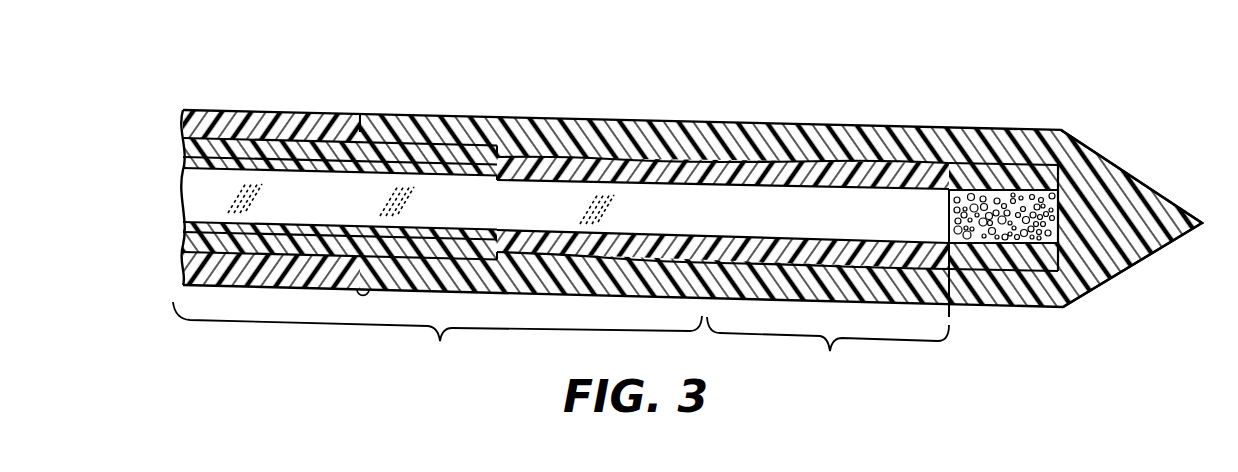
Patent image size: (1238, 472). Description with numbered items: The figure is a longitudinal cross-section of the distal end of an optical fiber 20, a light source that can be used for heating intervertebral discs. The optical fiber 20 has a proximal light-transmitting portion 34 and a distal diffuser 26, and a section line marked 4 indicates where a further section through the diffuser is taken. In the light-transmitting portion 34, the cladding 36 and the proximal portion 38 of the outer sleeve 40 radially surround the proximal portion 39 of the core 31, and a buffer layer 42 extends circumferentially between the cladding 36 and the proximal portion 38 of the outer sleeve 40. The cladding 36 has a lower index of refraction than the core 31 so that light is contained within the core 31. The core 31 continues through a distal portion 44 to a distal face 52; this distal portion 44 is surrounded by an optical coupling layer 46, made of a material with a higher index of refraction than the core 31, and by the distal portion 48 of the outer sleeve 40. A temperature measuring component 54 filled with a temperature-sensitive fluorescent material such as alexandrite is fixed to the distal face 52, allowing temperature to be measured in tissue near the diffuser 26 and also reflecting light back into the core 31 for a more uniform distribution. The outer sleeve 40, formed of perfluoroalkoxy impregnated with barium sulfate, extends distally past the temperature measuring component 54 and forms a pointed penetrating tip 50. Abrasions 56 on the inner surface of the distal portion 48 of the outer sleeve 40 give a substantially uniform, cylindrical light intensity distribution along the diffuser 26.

The optical fiber 20 is at (655, 65).
The diffuser 26 is at (828, 348).
The core 31 is at (773, 210).
The proximal light-transmitting portion 34 is at (437, 335).
The cladding 36 is at (406, 165).
The proximal portion of outer sleeve 38 is at (256, 118).
The proximal portion of core 39 is at (223, 180).
The outer sleeve 40 is at (628, 125).
The buffer layer 42 is at (262, 145).
The distal portion of core 44 is at (920, 213).
The optical coupling layer 46 is at (744, 172).
The distal portion of outer sleeve 48 is at (988, 135).
The pointed penetrating tip 50 is at (1202, 225).
The distal face 52 is at (949, 190).
The temperature measuring component 54 is at (1028, 210).
The abrasions 56 is at (1006, 140).
The section line 4- 4 is at (875, 108).